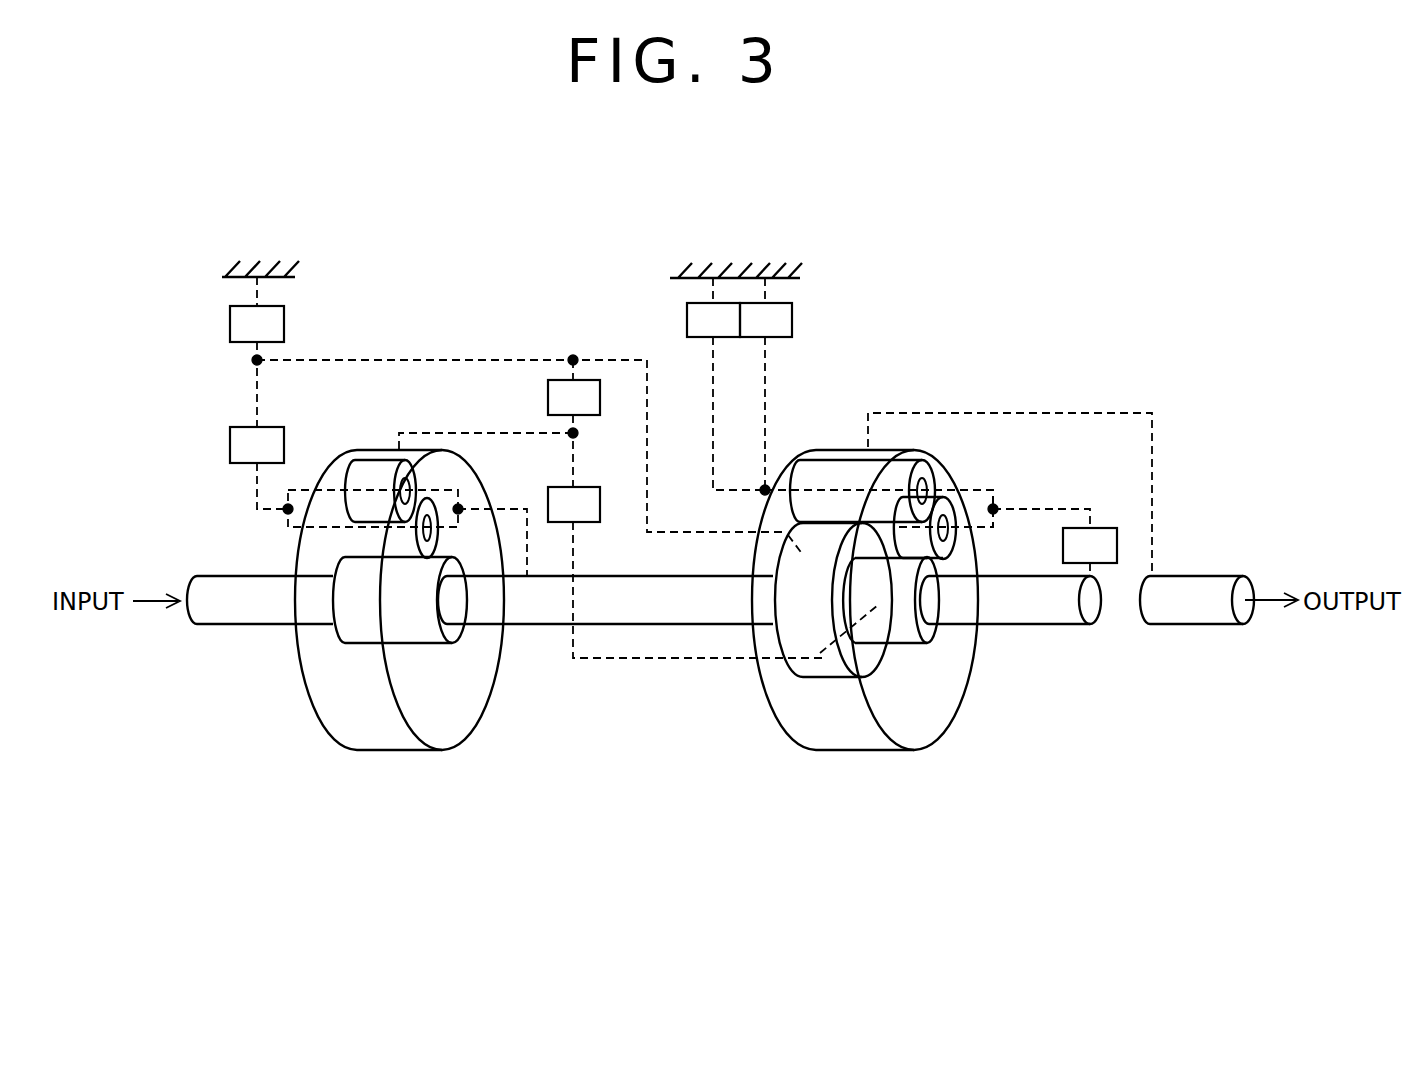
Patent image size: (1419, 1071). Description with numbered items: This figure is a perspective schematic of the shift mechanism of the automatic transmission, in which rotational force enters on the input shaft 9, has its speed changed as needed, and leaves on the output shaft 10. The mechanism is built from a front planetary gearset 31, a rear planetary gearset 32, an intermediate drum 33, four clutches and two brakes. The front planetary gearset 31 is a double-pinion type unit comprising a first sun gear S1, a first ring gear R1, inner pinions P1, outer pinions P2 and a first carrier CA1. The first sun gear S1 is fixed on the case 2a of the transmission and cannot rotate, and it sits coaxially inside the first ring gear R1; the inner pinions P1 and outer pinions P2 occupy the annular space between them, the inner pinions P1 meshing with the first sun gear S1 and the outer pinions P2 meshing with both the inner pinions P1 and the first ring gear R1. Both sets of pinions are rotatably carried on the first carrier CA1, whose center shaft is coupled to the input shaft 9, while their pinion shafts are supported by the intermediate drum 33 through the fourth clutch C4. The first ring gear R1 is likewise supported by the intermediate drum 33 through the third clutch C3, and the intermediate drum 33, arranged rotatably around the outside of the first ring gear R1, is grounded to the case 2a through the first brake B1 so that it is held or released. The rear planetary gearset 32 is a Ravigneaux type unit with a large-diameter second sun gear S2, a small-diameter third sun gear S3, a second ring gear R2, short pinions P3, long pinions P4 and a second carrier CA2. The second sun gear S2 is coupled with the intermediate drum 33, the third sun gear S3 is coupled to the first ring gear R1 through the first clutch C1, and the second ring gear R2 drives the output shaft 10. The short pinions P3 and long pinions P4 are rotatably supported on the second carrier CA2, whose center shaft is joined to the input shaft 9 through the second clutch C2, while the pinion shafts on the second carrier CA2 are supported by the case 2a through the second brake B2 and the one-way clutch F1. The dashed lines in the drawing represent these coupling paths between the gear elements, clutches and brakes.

The case 2a is at (263, 268).
The input shaft 9 is at (250, 612).
The output shaft 10 is at (1198, 612).
The front planetary gearset 31 is at (404, 613).
The rear planetary gearset 32 is at (938, 637).
The intermediate drum 33 is at (455, 360).
The first brake B1 is at (257, 324).
The second brake B2 is at (766, 320).
The first clutch C1 is at (574, 504).
The second clutch C2 is at (1090, 545).
The third clutch C3 is at (574, 397).
The fourth clutch C4 is at (257, 445).
The one-way clutch F1 is at (713, 320).
The first ring gear R1 is at (328, 708).
The second ring gear R2 is at (834, 745).
The first sun gear S1 is at (418, 632).
The second sun gear S2 is at (826, 668).
The third sun gear S3 is at (900, 633).
The inner pinions P1 is at (435, 540).
The outer pinions P2 is at (371, 470).
The short pinions P3 is at (948, 545).
The long pinions P4 is at (932, 468).
The first carrier CA1 is at (448, 490).
The second carrier CA2 is at (1013, 507).